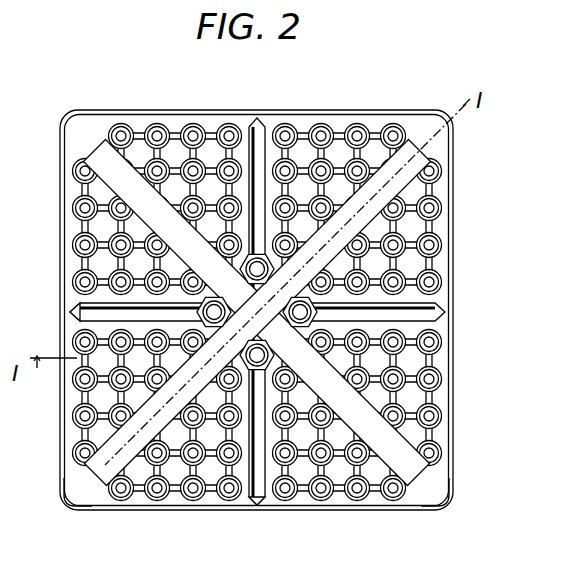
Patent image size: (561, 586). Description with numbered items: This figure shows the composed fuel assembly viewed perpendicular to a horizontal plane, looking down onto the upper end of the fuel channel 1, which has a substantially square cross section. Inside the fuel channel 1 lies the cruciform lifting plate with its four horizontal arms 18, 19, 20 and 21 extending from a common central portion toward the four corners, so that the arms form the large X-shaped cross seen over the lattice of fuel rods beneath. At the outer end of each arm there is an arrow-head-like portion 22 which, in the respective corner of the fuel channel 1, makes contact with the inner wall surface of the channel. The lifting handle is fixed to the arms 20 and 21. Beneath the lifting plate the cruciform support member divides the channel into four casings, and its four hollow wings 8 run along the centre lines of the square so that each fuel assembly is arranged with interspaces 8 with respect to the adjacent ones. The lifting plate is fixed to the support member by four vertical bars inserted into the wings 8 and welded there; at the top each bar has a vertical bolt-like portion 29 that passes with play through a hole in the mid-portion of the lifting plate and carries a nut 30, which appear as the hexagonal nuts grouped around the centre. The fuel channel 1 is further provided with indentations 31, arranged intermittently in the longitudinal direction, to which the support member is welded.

The fuel channel 1 is at (450, 340).
The hollow wings 8 is at (258, 120).
The horizontal arm 18 is at (432, 432).
The horizontal arm 19 is at (118, 178).
The horizontal arm 20 is at (185, 483).
The horizontal arm 21 is at (398, 173).
The arrow-head-like portion 22 is at (90, 500).
The bolt-like portion 29 is at (281, 300).
The nut 30 is at (275, 349).
The indentations 31 is at (73, 312).